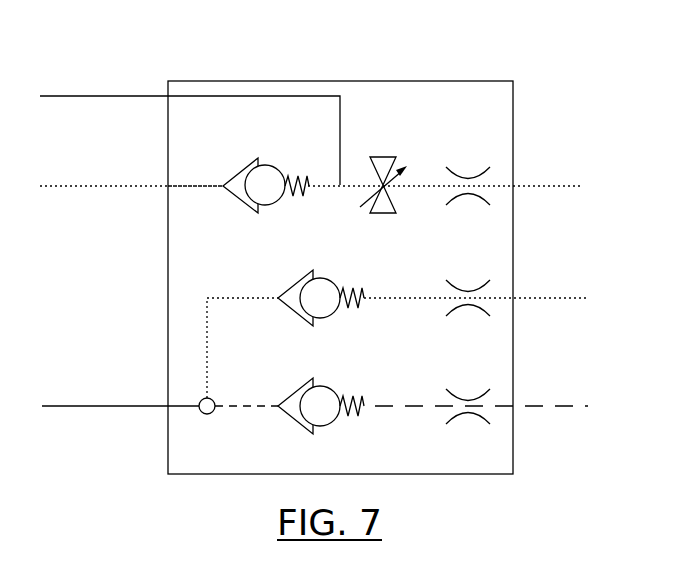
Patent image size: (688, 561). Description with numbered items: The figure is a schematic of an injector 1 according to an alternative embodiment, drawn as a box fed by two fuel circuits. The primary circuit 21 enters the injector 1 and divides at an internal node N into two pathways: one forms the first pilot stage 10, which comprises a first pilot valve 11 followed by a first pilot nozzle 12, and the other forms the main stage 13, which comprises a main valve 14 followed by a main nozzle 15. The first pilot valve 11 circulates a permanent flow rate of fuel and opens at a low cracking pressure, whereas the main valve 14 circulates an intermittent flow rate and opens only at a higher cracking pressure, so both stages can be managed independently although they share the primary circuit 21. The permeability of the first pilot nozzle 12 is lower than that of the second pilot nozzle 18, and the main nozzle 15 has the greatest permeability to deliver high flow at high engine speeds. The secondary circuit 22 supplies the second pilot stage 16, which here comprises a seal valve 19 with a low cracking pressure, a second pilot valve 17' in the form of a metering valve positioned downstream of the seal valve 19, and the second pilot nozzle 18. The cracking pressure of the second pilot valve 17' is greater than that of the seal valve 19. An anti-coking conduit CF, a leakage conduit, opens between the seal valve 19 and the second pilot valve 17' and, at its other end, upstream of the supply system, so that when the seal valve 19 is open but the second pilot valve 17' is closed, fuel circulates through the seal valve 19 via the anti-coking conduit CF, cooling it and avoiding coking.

The injector 1 is at (152, 76).
The first pilot stage 10 is at (218, 294).
The first pilot valve 11 is at (326, 277).
The first pilot nozzle 12 is at (473, 288).
The main stage 13 is at (252, 410).
The main valve 14 is at (330, 385).
The main nozzle 15 is at (473, 395).
The second pilot stage 16 is at (200, 184).
The second pilot valve 17' is at (403, 162).
The second pilot nozzle 18 is at (473, 176).
The seal valve 19 is at (273, 164).
The primary circuit 21 is at (68, 410).
The secondary circuit 22 is at (68, 190).
The anti-coking conduit CF is at (72, 98).
The internal node N is at (208, 415).